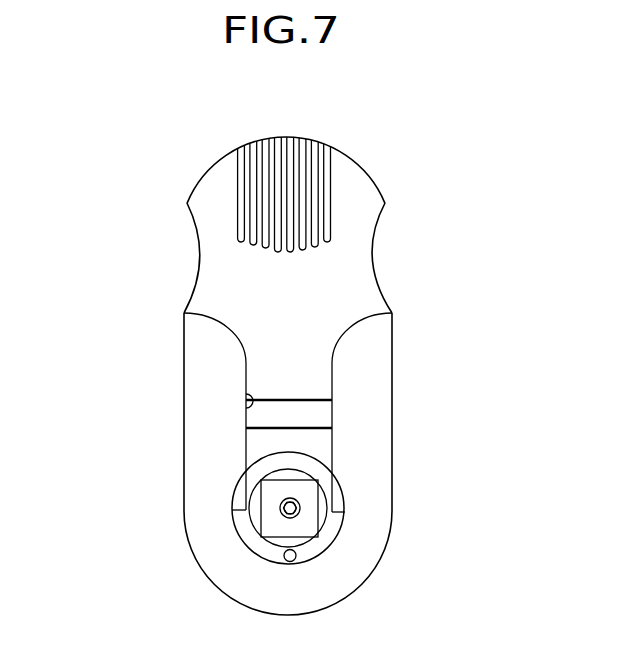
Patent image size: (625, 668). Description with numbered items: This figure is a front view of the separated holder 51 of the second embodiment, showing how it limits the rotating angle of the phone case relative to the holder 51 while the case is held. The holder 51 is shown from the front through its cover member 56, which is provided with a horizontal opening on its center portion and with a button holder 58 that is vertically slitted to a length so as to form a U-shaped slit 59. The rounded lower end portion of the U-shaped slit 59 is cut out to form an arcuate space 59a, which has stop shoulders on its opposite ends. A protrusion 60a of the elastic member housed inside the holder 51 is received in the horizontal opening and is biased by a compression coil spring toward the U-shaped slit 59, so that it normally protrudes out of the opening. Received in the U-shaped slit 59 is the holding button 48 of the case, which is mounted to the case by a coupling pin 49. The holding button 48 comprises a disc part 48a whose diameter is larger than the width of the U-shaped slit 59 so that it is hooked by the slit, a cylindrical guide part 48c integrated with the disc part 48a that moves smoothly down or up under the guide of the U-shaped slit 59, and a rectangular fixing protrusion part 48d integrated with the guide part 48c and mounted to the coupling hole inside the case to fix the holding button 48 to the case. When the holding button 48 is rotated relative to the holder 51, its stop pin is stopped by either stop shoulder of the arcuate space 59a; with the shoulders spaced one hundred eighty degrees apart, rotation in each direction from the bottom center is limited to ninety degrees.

The cover member 56 is at (187, 201).
The button holder 58 is at (197, 385).
The U-shaped slit 59 is at (243, 416).
The arcuate space 59a is at (247, 499).
The protrusion 60a is at (334, 412).
The holding button 48 is at (333, 506).
The disc part 48a is at (334, 479).
The cylindrical guide part 48c is at (302, 523).
The rectangular fixing protrusion part 48d is at (277, 527).
The coupling pin 49 is at (293, 500).
The holder 51 is at (210, 582).